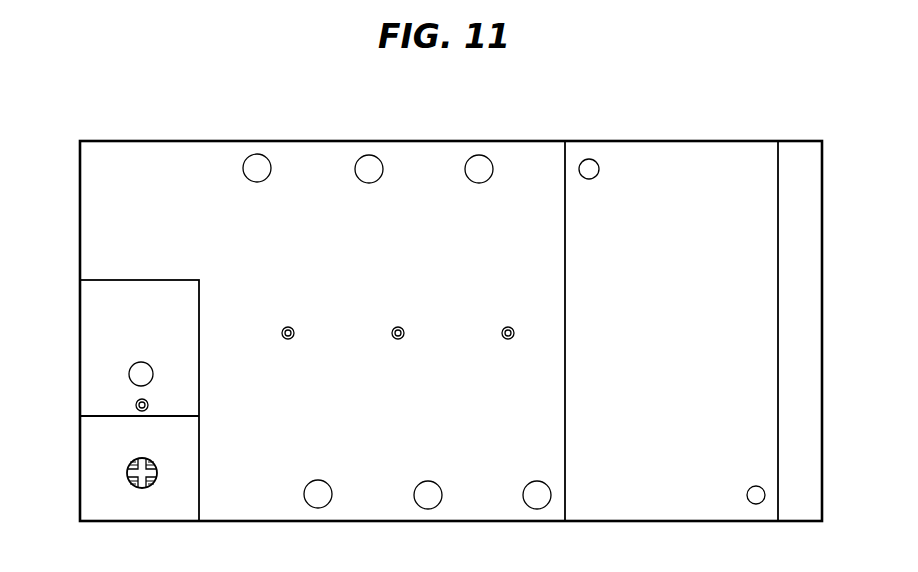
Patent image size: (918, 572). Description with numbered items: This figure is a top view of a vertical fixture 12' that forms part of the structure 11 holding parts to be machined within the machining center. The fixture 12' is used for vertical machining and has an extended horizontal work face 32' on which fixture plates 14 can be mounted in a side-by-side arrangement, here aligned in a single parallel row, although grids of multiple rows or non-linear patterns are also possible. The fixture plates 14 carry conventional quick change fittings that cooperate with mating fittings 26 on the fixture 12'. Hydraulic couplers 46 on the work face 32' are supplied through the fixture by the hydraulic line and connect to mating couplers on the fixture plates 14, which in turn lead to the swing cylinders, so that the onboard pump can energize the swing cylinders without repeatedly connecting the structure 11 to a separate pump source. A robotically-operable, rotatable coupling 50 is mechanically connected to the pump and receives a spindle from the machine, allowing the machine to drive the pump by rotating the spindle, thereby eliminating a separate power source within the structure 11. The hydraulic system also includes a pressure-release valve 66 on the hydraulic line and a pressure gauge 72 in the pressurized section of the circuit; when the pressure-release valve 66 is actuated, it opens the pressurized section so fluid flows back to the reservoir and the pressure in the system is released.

The structure 11 is at (693, 141).
The fixture 12' is at (504, 309).
The fixture plate 14 is at (778, 412).
The mating fitting 26 is at (318, 509).
The work face 32' is at (139, 426).
The hydraulic coupler 46 is at (398, 340).
The rotatable coupling 50 is at (128, 485).
The pressure-release valve 66 is at (135, 404).
The pressure gauge 72 is at (138, 373).